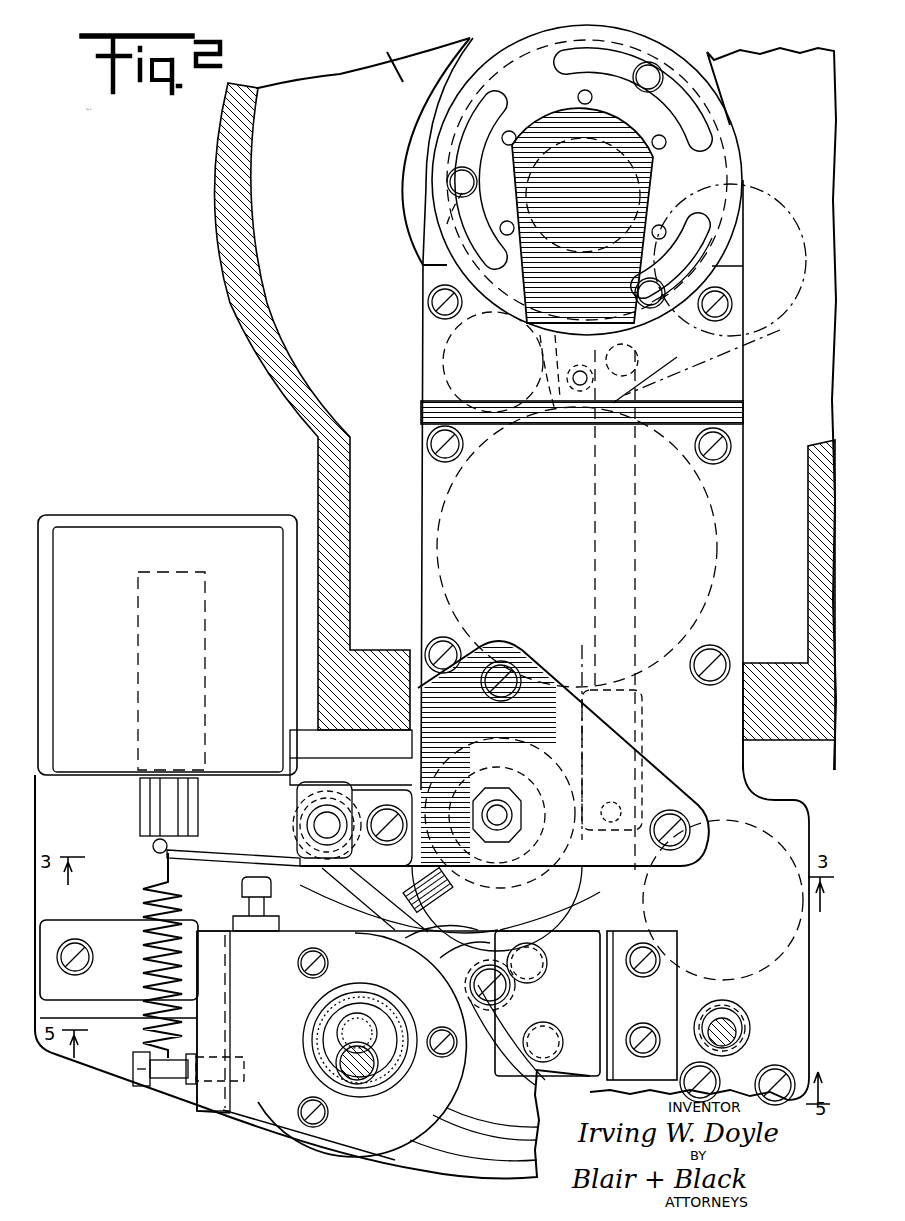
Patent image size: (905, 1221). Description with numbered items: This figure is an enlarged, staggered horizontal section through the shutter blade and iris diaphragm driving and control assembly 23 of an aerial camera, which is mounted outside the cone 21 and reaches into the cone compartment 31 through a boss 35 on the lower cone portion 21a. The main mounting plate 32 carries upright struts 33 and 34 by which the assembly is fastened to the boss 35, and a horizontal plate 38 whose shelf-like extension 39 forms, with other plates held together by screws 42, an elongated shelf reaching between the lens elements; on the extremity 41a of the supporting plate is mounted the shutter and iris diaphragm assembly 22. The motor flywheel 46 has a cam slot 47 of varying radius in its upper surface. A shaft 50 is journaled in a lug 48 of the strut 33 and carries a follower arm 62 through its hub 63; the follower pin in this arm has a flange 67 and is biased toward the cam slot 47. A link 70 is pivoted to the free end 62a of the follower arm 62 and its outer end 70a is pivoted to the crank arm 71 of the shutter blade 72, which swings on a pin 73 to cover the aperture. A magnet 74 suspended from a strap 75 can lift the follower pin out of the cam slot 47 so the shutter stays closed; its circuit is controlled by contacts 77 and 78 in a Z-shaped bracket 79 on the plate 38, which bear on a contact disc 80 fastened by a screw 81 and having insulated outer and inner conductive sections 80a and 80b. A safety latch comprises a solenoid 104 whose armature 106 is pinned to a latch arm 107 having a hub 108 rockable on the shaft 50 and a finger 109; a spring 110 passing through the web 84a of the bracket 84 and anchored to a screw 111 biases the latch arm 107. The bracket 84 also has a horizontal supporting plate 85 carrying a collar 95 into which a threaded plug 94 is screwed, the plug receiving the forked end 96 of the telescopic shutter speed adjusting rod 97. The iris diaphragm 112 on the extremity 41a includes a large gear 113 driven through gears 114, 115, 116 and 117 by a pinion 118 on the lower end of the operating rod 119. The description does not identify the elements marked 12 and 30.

The pivot pin 12 is at (578, 390).
The cone 21 is at (172, 154).
The lower cone portion 21a is at (236, 258).
The shutter and iris diaphragm assembly 22 is at (718, 44).
The shutter blade and iris diaphragm driving and control assembly 23 is at (117, 1143).
The housing top edge 30 is at (387, 52).
The cone compartment 31 is at (337, 208).
The main mounting plate 32 is at (197, 522).
The upright strut 33 is at (300, 740).
The upright strut 34 is at (750, 752).
The boss 35 is at (806, 563).
The horizontal plate 38 is at (780, 812).
The shelf-like extension 39 is at (735, 494).
The extremity of supporting plate 41a is at (727, 125).
The screws 42 is at (428, 442).
The flywheel 46 is at (497, 1172).
The cam slot 47 is at (448, 1140).
The lug 48 is at (300, 768).
The shaft 50 is at (300, 838).
The follower arm 62 is at (535, 878).
The free end of follower arm 62a is at (644, 840).
The hub 63 is at (272, 882).
The flange 67 is at (525, 745).
The link 70 is at (637, 582).
The outer end of link 70a is at (636, 355).
The crank arm 71 is at (640, 380).
The shutter blade 72 is at (524, 200).
The pin 73 is at (566, 132).
The magnet 74 is at (525, 720).
The strap 75 is at (518, 672).
The contact 77 is at (545, 966).
The contact 78 is at (547, 1030).
The Z-shaped bracket 79 is at (620, 945).
The contact disc 80 is at (523, 1108).
The outer conductive section 80a is at (470, 952).
The inner conductive section 80b is at (449, 975).
The screw 81 is at (490, 1000).
The bracket 84 is at (92, 1055).
The web of bracket 84a is at (88, 1002).
The horizontal supporting plate 85 is at (278, 1118).
The threaded plug 94 is at (358, 1012).
The collar 95 is at (318, 1018).
The forked end 96 is at (340, 1030).
The adjusting rod 97 is at (352, 1080).
The solenoid 104 is at (100, 535).
The armature 106 is at (140, 792).
The latch arm 107 is at (245, 858).
The hub 108 is at (300, 826).
The finger 109 is at (440, 905).
The spring 110 is at (145, 897).
The screw 111 is at (150, 1078).
The iris diaphragm 112 is at (504, 50).
The large gear 113 is at (447, 224).
The gear 114 is at (443, 327).
The gear 115 is at (440, 485).
The gear 116 is at (712, 848).
The gear 117 is at (800, 868).
The pinion 118 is at (745, 1008).
The operating rod 119 is at (724, 1046).